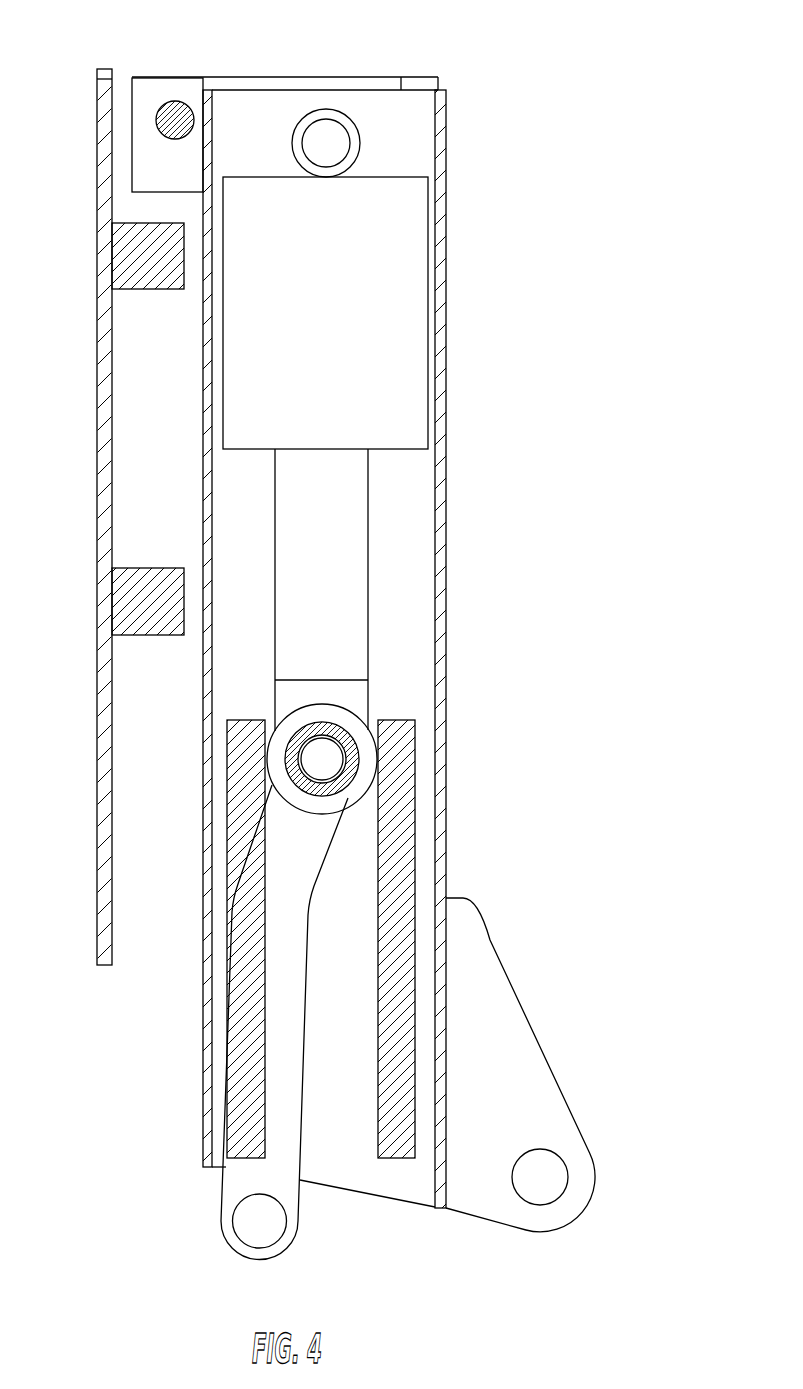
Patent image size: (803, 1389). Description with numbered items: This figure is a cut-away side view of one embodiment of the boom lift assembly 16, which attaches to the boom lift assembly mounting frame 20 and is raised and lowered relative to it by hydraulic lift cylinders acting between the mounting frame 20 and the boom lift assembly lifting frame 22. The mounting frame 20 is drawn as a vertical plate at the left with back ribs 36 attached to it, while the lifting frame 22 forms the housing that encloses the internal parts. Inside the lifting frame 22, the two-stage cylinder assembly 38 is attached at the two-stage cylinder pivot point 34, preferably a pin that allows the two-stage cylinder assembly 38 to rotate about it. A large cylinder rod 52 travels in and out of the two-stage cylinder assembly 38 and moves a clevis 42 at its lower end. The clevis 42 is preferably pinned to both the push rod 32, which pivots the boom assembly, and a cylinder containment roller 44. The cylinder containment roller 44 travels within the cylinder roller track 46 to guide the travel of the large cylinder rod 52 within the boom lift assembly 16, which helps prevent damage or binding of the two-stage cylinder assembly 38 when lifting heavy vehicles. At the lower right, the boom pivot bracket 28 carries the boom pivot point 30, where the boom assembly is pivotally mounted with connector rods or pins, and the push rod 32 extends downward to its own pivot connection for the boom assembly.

The boom lift assembly 16 is at (332, 46).
The boom lift assembly mounting frame 20 is at (97, 428).
The boom lift assembly lifting frame 22 is at (192, 89).
The boom pivot bracket 28 is at (547, 1083).
The boom pivot point 30 is at (555, 1180).
The push rod 32 is at (292, 1203).
The two-stage cylinder pivot point 34 is at (337, 140).
The back ribs 36 is at (133, 289).
The two-stage cylinder assembly 38 is at (406, 294).
The clevis 42 is at (362, 700).
The cylinder containment roller 44 is at (350, 797).
The cylinder roller track 46 is at (415, 798).
The large cylinder rod 52 is at (358, 568).